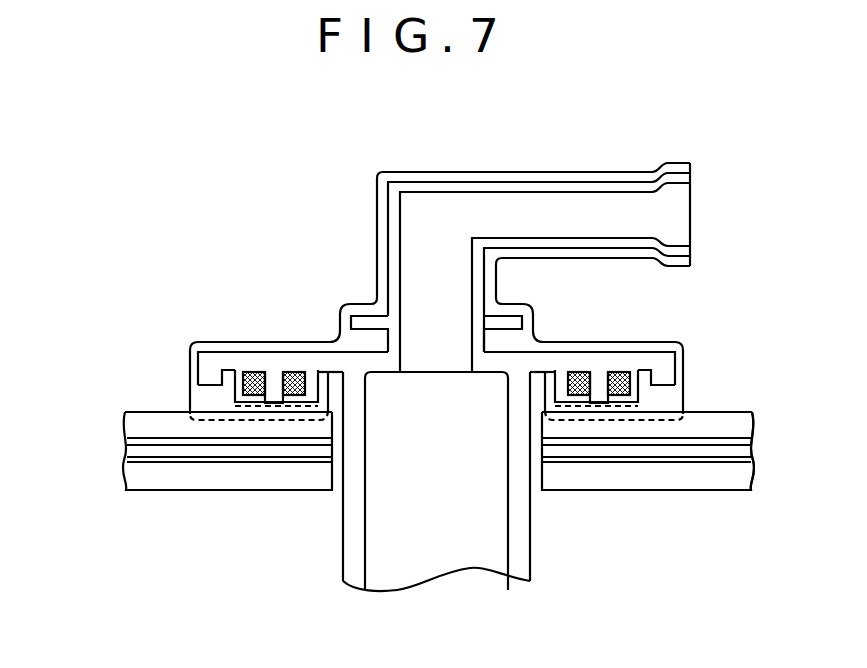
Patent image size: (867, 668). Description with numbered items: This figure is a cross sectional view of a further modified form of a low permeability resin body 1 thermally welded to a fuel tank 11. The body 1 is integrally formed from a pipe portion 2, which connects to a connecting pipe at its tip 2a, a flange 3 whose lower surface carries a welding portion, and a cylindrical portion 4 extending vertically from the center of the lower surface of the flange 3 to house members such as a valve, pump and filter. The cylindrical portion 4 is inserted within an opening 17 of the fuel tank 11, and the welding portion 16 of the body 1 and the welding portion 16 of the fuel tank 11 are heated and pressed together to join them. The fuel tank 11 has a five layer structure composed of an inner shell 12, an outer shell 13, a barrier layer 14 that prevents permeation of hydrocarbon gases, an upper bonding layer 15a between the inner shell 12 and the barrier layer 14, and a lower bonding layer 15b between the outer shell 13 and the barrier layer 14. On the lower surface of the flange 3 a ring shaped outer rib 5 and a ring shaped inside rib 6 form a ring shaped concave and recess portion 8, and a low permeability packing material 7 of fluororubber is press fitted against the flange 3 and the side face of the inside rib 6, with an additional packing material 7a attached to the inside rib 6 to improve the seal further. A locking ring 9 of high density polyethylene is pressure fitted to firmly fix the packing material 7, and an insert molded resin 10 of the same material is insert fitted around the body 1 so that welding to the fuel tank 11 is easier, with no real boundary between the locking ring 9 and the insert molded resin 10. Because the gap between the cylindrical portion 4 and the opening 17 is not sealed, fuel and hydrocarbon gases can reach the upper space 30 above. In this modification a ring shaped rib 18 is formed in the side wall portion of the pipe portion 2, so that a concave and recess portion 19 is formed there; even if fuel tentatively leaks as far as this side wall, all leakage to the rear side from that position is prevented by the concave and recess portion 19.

The body 1 is at (346, 146).
The pipe portion 2 is at (499, 186).
The tip of the pipe portion 2a is at (690, 191).
The flange 3 is at (249, 372).
The cylindrical portion 4 is at (348, 555).
The outer rib 5 is at (210, 352).
The inside rib 6 is at (273, 372).
The packing material 7 is at (258, 376).
The packing material 7a is at (300, 376).
The concave and recess portion 8 is at (233, 362).
The locking ring 9 is at (235, 402).
The insert molded resin 10 is at (588, 178).
The fuel tank 11 is at (750, 490).
The inner shell 12 is at (145, 488).
The outer shell 13 is at (128, 420).
The barrier layer 14 is at (128, 450).
The upper bonding layer 15a is at (128, 441).
The lower bonding layer 15b is at (128, 461).
The welding portion 16 is at (262, 410).
The opening 17 is at (345, 492).
The ring shaped rib 18 is at (368, 318).
The concave and recess portion 19 is at (391, 300).
The upper space 30 is at (338, 390).